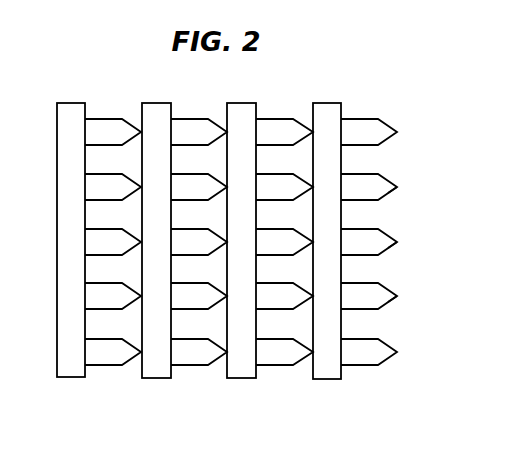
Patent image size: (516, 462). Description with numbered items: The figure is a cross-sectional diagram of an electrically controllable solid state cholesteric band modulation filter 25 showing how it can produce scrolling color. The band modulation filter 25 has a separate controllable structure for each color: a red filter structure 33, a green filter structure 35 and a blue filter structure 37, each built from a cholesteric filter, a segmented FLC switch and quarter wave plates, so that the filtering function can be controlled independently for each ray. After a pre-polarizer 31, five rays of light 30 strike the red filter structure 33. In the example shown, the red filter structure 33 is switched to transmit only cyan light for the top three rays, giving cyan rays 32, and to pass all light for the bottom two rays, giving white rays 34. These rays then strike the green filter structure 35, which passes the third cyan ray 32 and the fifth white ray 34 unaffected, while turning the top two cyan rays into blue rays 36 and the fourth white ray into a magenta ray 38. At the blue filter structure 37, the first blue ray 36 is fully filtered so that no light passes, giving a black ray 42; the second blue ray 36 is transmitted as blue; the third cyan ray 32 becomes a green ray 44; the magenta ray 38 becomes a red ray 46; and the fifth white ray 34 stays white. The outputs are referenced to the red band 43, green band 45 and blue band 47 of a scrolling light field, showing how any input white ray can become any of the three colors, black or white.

The band modulation filter 25 is at (432, 150).
The rays of light 30 is at (111, 119).
The pre-polarizer 31 is at (65, 377).
The cyan rays 32 is at (204, 119).
The red filter structure 33 is at (148, 378).
The white rays 34 is at (209, 283).
The green filter structure 35 is at (233, 378).
The blue rays 36 is at (289, 119).
The blue filter structure 37 is at (320, 379).
The magenta ray 38 is at (294, 283).
The black ray 42 is at (370, 119).
The red band 43 is at (388, 303).
The green ray 44 is at (379, 229).
The green band 45 is at (388, 249).
The red ray 46 is at (379, 283).
The blue band 47 is at (388, 194).